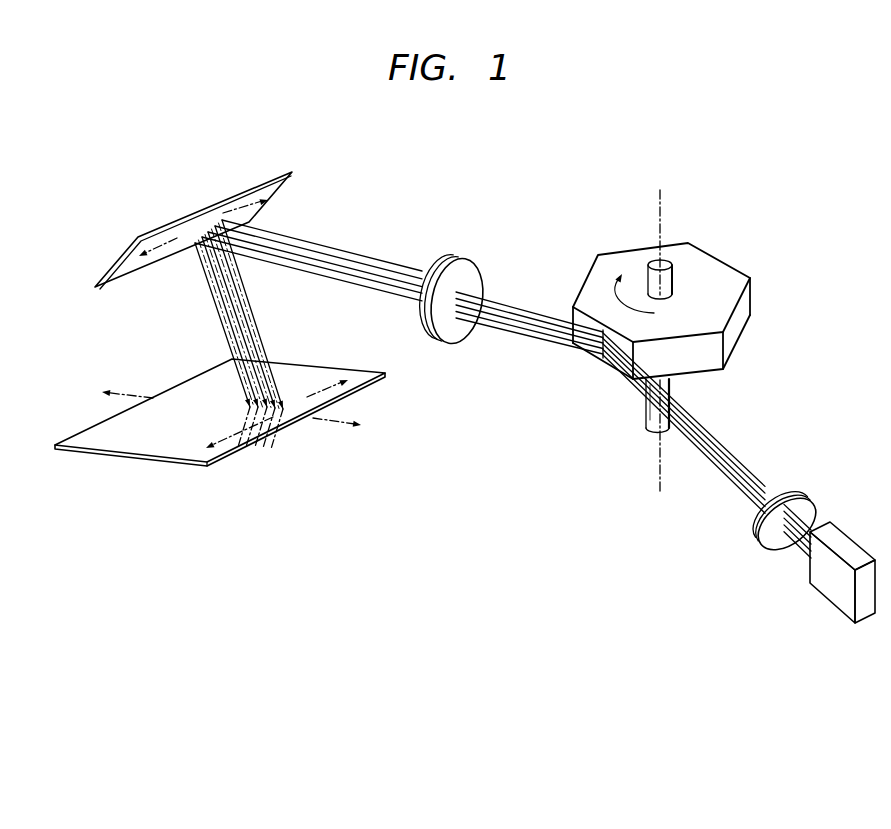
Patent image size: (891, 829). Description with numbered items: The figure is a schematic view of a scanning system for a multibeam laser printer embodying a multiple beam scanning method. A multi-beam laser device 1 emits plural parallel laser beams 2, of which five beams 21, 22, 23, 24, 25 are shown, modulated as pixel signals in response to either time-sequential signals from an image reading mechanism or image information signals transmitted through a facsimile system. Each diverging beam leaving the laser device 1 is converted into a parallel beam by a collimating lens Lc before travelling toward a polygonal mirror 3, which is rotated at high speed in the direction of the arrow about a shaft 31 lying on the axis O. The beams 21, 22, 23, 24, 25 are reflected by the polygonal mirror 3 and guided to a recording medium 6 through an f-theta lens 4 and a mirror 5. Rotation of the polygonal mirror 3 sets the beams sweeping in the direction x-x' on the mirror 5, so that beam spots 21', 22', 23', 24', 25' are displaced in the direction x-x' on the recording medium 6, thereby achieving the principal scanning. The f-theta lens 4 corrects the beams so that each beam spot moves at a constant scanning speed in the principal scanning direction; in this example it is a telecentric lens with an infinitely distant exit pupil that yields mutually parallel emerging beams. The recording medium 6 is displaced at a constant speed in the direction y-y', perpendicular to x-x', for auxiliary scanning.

The multi-beam laser device 1 is at (843, 543).
The laser beams 2 is at (725, 445).
The laser beam 21 is at (707, 431).
The laser beam 22 is at (707, 438).
The laser beam 23 is at (707, 444).
The laser beam 24 is at (709, 451).
The laser beam 25 is at (710, 456).
The polygonal mirror 3 is at (733, 262).
The shaft 31 is at (666, 258).
The f-theta lens 4 is at (462, 259).
The mirror 5 is at (221, 200).
The recording medium 6 is at (300, 373).
The beam spot 21' is at (276, 341).
The beam spot 22' is at (270, 361).
The beam spot 23' is at (247, 361).
The beam spot 24' is at (231, 375).
The beam spot 25' is at (223, 369).
The collimating lens Lc is at (760, 539).
The rotation axis O is at (659, 339).